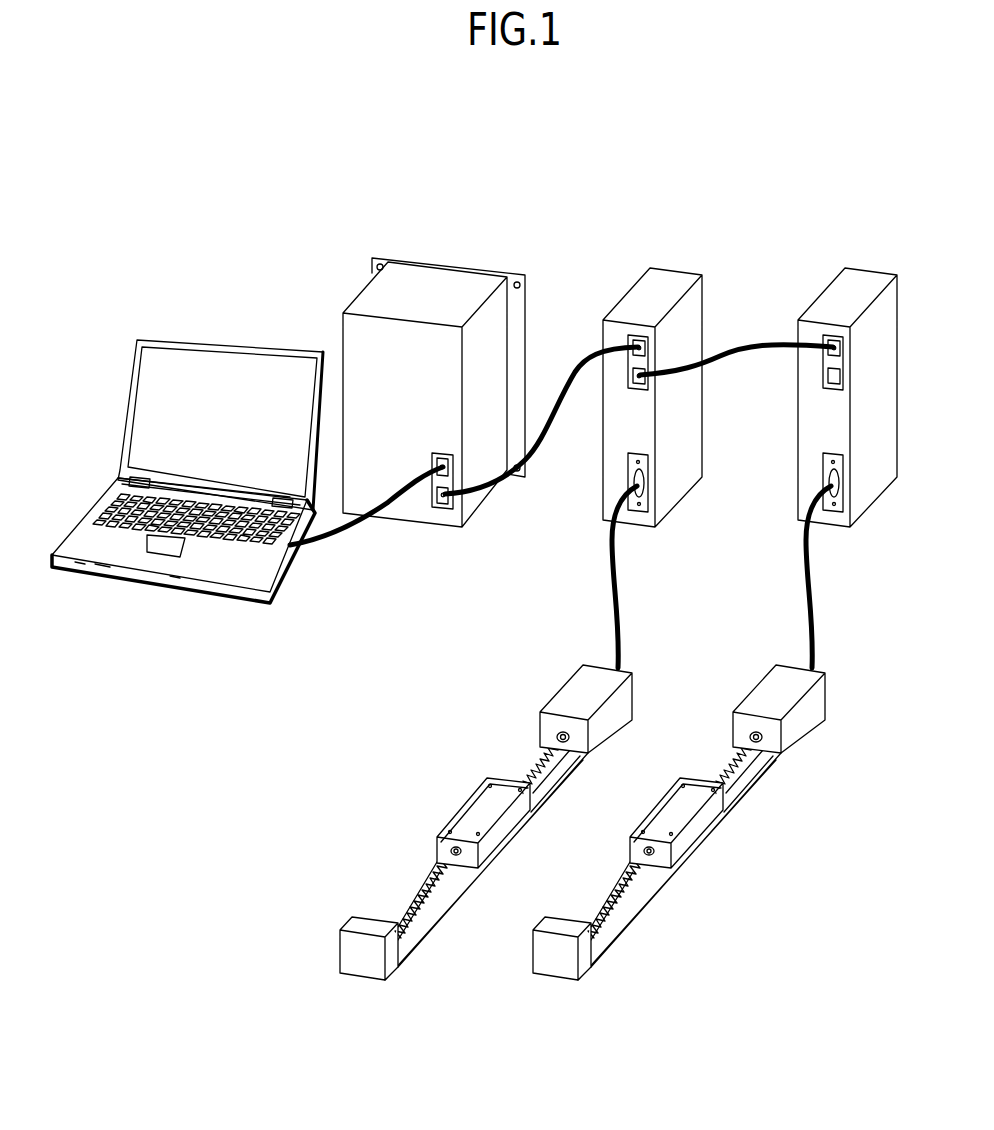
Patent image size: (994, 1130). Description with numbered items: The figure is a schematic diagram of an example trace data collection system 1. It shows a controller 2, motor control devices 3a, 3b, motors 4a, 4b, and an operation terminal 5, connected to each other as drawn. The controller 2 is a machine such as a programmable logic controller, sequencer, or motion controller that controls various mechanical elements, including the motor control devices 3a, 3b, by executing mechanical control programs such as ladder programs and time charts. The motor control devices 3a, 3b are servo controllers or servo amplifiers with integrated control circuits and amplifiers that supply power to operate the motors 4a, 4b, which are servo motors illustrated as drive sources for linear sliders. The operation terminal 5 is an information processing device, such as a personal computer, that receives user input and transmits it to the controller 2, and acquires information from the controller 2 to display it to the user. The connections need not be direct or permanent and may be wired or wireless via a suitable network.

The trace data collection system 1 is at (292, 1038).
The controller 2 is at (435, 264).
The motor control device 3a is at (675, 269).
The motor control device 3b is at (870, 269).
The motor 4a is at (633, 693).
The motor 4b is at (827, 693).
The operation terminal 5 is at (196, 338).